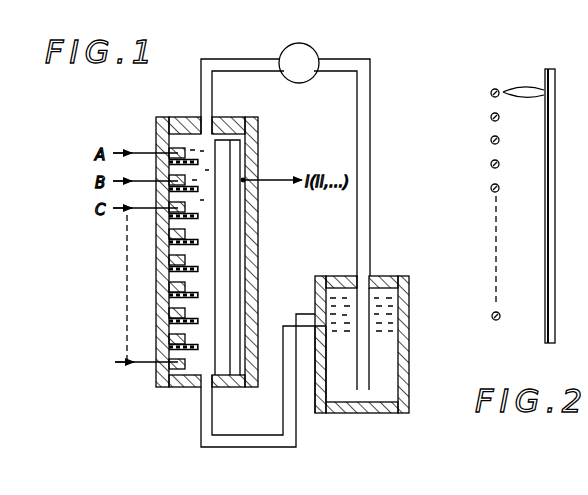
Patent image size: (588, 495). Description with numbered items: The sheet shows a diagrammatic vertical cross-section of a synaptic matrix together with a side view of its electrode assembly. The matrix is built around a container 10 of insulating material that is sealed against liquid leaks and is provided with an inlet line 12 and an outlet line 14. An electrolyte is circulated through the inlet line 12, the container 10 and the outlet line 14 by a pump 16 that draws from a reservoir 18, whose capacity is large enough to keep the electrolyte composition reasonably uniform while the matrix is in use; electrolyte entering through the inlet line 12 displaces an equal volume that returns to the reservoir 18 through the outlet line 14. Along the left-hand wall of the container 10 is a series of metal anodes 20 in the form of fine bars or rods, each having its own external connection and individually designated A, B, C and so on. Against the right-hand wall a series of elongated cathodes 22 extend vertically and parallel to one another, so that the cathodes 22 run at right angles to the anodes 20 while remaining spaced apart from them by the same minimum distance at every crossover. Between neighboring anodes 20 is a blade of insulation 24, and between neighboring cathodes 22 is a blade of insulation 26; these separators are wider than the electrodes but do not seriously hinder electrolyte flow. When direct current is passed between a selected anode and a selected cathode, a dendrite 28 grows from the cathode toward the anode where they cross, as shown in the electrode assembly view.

In FIG. 1, the container 10 is at (258, 235).
In FIG. 1, the inlet line 12 is at (200, 89).
In FIG. 1, the outlet line 14 is at (200, 432).
In FIG. 1, the pump 16 is at (309, 58).
In FIG. 1, the reservoir 18 is at (341, 263).
In FIG. 1, the metal anodes 20 is at (190, 376).
In FIG. 2, the metal anodes 20 is at (490, 92).
In FIG. 1, the elongated cathodes 22 is at (240, 312).
In FIG. 2, the elongated cathodes 22 is at (545, 330).
In FIG. 1, the blade of insulation 24 is at (178, 321).
In FIG. 1, the blade of insulation 26 is at (215, 360).
In FIG. 2, the dendrite 28 is at (519, 92).